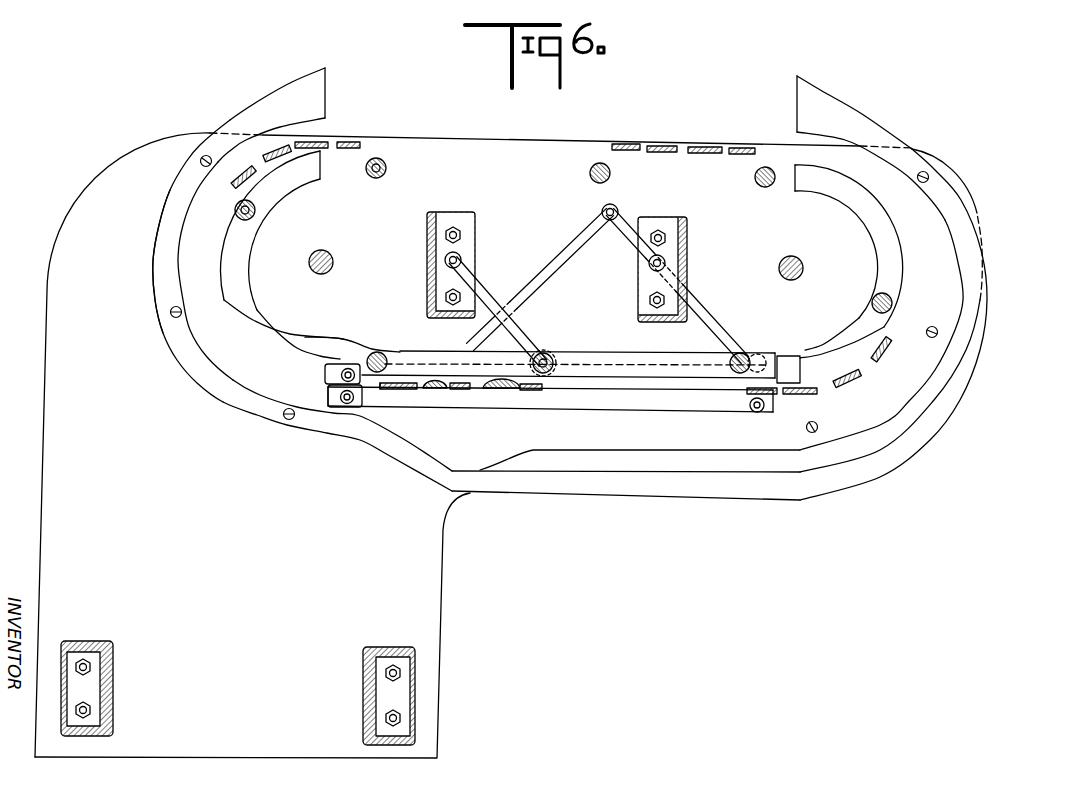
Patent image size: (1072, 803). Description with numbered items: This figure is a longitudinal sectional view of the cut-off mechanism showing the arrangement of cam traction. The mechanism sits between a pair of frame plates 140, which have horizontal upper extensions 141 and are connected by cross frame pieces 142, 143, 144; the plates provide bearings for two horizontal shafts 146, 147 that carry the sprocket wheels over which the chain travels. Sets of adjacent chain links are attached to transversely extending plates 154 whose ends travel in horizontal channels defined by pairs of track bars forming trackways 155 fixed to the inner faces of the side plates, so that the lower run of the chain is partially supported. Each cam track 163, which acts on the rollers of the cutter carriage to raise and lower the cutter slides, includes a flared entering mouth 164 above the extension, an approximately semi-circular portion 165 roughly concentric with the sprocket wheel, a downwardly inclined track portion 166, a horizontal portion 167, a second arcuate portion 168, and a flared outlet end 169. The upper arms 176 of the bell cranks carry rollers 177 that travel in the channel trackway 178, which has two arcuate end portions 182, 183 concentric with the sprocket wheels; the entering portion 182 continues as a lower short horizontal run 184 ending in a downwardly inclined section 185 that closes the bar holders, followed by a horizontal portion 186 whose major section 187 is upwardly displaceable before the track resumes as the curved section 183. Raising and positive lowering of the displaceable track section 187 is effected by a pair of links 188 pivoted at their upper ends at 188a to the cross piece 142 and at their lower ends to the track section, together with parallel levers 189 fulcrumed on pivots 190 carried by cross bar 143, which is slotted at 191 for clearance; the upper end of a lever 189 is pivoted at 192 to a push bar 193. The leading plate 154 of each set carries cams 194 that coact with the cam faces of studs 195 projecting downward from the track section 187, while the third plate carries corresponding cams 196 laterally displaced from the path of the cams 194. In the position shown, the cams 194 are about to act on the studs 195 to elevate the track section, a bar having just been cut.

The frame plate 140 is at (420, 556).
The upper extension 141 is at (957, 172).
The cross frame piece 142 is at (428, 214).
The cross frame piece 143 is at (688, 228).
The cross frame piece 144 is at (105, 672).
The shaft 146 is at (320, 250).
The shaft 147 is at (794, 257).
The plate 154 is at (307, 143).
The trackway 155 is at (330, 372).
The cam track 163 is at (230, 410).
The flared entering mouth 164 is at (307, 90).
The semi-circular portion 165 is at (153, 262).
The downwardly inclined track portion 166 is at (400, 460).
The horizontal portion 167 is at (643, 492).
The second arcuate portion 168 is at (990, 307).
The flared outlet end 169 is at (809, 93).
The upper arm 176 is at (252, 215).
The roller 177 is at (258, 204).
The channel trackway 178 is at (298, 325).
The arcuate end portion 182 is at (237, 258).
The arcuate end portion 183 is at (876, 262).
The lower short horizontal run 184 is at (327, 332).
The downwardly inclined section 185 is at (372, 348).
The horizontal portion 186 is at (452, 350).
The displaceable track section 187 is at (640, 368).
The link 188 is at (530, 325).
The pivot 188a is at (462, 258).
The lever 189 is at (716, 302).
The pivot 190 is at (645, 280).
The slot 191 is at (688, 262).
The pivot 192 is at (602, 212).
The push bar 193 is at (566, 254).
The cam 194 is at (240, 187).
The stud 195 is at (505, 390).
The cam 196 is at (310, 167).